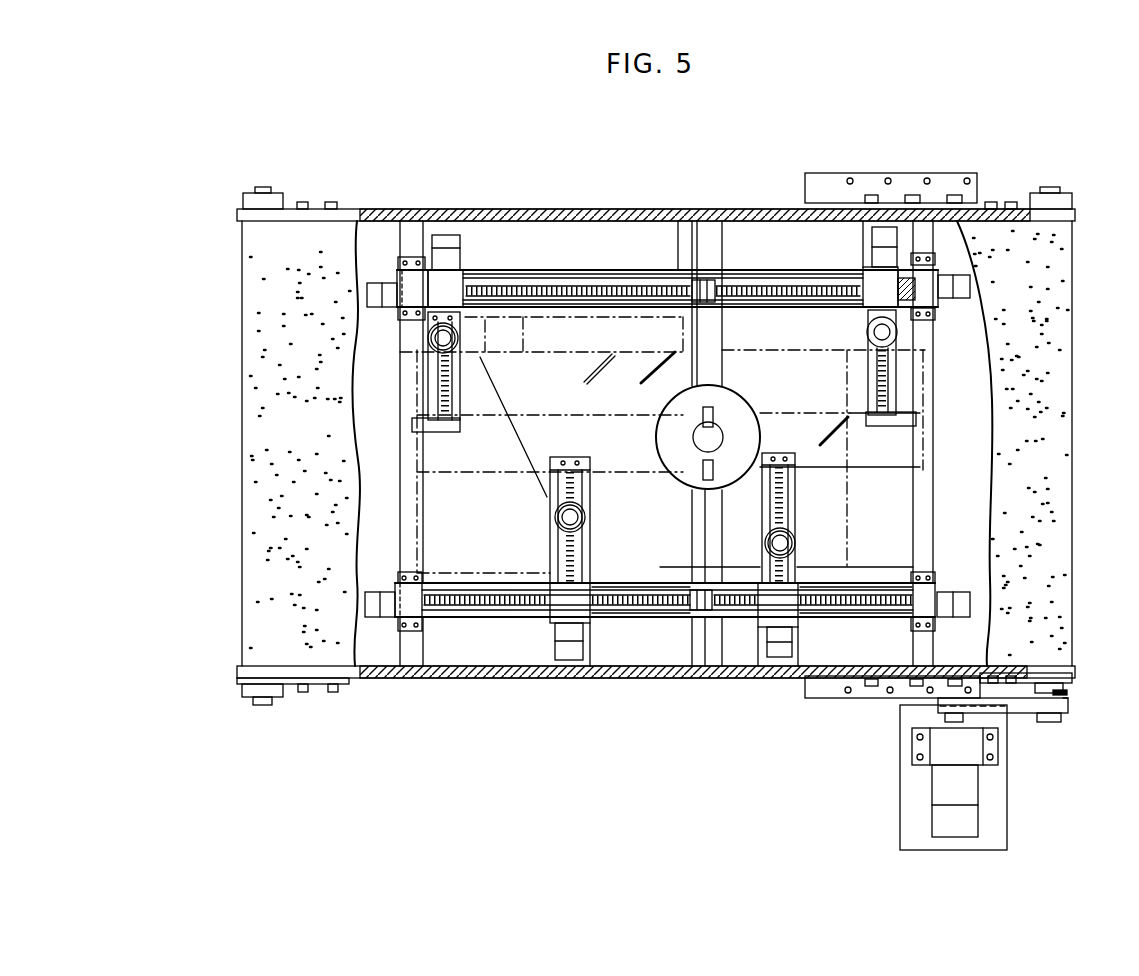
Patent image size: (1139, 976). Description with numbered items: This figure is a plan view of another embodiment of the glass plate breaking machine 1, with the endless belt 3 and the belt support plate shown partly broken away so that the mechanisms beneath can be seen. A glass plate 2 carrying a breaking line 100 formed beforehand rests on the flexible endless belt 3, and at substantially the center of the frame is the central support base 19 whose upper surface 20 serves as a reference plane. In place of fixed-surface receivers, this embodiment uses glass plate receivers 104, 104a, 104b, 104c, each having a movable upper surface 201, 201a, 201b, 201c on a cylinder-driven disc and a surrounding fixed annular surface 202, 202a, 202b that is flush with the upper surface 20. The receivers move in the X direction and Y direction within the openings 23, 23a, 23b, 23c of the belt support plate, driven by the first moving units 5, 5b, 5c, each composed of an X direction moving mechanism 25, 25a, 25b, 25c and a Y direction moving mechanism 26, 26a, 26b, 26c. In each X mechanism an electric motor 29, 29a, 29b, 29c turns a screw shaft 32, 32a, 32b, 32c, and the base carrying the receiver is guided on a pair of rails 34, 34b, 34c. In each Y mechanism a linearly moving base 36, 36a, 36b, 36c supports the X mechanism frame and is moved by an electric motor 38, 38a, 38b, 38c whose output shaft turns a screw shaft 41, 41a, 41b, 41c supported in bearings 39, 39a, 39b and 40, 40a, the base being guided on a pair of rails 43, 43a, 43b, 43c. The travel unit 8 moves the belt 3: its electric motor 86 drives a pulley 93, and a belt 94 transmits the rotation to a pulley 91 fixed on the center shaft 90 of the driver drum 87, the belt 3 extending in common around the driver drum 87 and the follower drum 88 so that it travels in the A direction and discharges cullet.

The glass plate breaking machine 1 is at (867, 163).
The glass plate 2 is at (523, 317).
The flexible endless belt 3 is at (245, 607).
The first moving unit 5 is at (386, 632).
The first moving unit 5b is at (782, 634).
The first moving unit 5c is at (855, 236).
The travel unit 8 is at (892, 783).
The central support base 19 is at (657, 436).
The upper surface of the central support base 20 is at (742, 408).
The opening 23 is at (417, 545).
The opening 23a is at (545, 268).
The opening 23b is at (917, 482).
The opening 23c is at (777, 375).
The X direction moving mechanism 25 is at (573, 660).
The X direction moving mechanism 25a is at (463, 396).
The X direction moving mechanism 25b is at (795, 655).
The X direction moving mechanism 25c is at (897, 390).
The Y direction moving mechanism 26 is at (488, 624).
The Y direction moving mechanism 26a is at (483, 270).
The Y direction moving mechanism 26b is at (820, 620).
The Y direction moving mechanism 26c is at (850, 308).
The electric motor 29 is at (556, 660).
The electric motor 29a is at (449, 237).
The electric motor 29b is at (779, 660).
The electric motor 29c is at (893, 225).
The screw shaft 32 is at (550, 545).
The screw shaft 32a is at (440, 388).
The screw shaft 32b is at (795, 490).
The screw shaft 32c is at (868, 390).
The rails 34 is at (550, 563).
The rails 34b is at (780, 453).
The rails 34c is at (866, 430).
The linearly moving base 36 is at (552, 625).
The linearly moving base 36a is at (410, 285).
The linearly moving base 36b is at (762, 628).
The linearly moving base 36c is at (860, 280).
The electric motor 38 is at (373, 617).
The electric motor 38a is at (432, 238).
The electric motor 38b is at (958, 618).
The electric motor 38c is at (945, 298).
The bearing 39 is at (692, 660).
The bearing 39a is at (680, 222).
The bearing 39b is at (705, 660).
The bearing 40 is at (414, 632).
The bearing 40a is at (400, 255).
The screw shaft 41 is at (615, 620).
The screw shaft 41a is at (598, 268).
The screw shaft 41b is at (893, 618).
The screw shaft 41c is at (787, 268).
The rails 43 is at (657, 595).
The rails 43a is at (563, 303).
The rails 43b is at (917, 590).
The rails 43c is at (757, 283).
The electric motor 86 is at (973, 795).
The driver drum 87 is at (1070, 665).
The follower drum 88 is at (240, 690).
The center shaft 90 is at (1062, 692).
The pulley 91 is at (1060, 722).
The pulley 93 is at (943, 712).
The belt 94 is at (1070, 705).
The breaking line 100 is at (648, 268).
The glass plate receiver 104 is at (562, 519).
The glass plate receiver 104a is at (432, 340).
The glass plate receiver 104b is at (795, 543).
The glass plate receiver 104c is at (892, 336).
The upper surface 201 is at (555, 512).
The upper surface 201a is at (459, 340).
The upper surface 201b is at (796, 550).
The upper surface 201c is at (866, 340).
The annular surface 202 is at (586, 515).
The annular surface 202a is at (427, 342).
The annular surface 202b is at (795, 535).
The A direction A is at (300, 455).
The X direction X is at (442, 533).
The Y direction Y is at (478, 632).